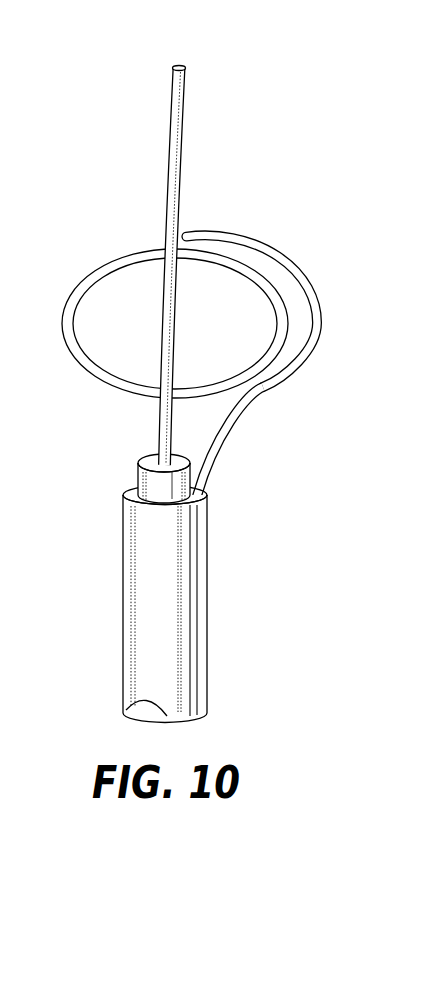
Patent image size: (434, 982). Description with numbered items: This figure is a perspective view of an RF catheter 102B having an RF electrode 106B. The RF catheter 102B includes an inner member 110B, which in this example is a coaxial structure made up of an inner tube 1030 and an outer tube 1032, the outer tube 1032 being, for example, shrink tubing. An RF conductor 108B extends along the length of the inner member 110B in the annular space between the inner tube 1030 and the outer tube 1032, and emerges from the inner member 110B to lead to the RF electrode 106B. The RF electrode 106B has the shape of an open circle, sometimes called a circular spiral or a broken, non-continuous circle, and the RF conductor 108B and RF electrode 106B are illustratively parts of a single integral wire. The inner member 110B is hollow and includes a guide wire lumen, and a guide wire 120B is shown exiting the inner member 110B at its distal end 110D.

The RF catheter 102B is at (212, 394).
The RF electrode 106B is at (303, 360).
The RF conductor 108B is at (240, 420).
The inner member 110B is at (159, 604).
The distal end 110D is at (148, 445).
The guide wire 120B is at (173, 155).
The inner tube 1030 is at (137, 472).
The outer tube 1032 is at (192, 523).